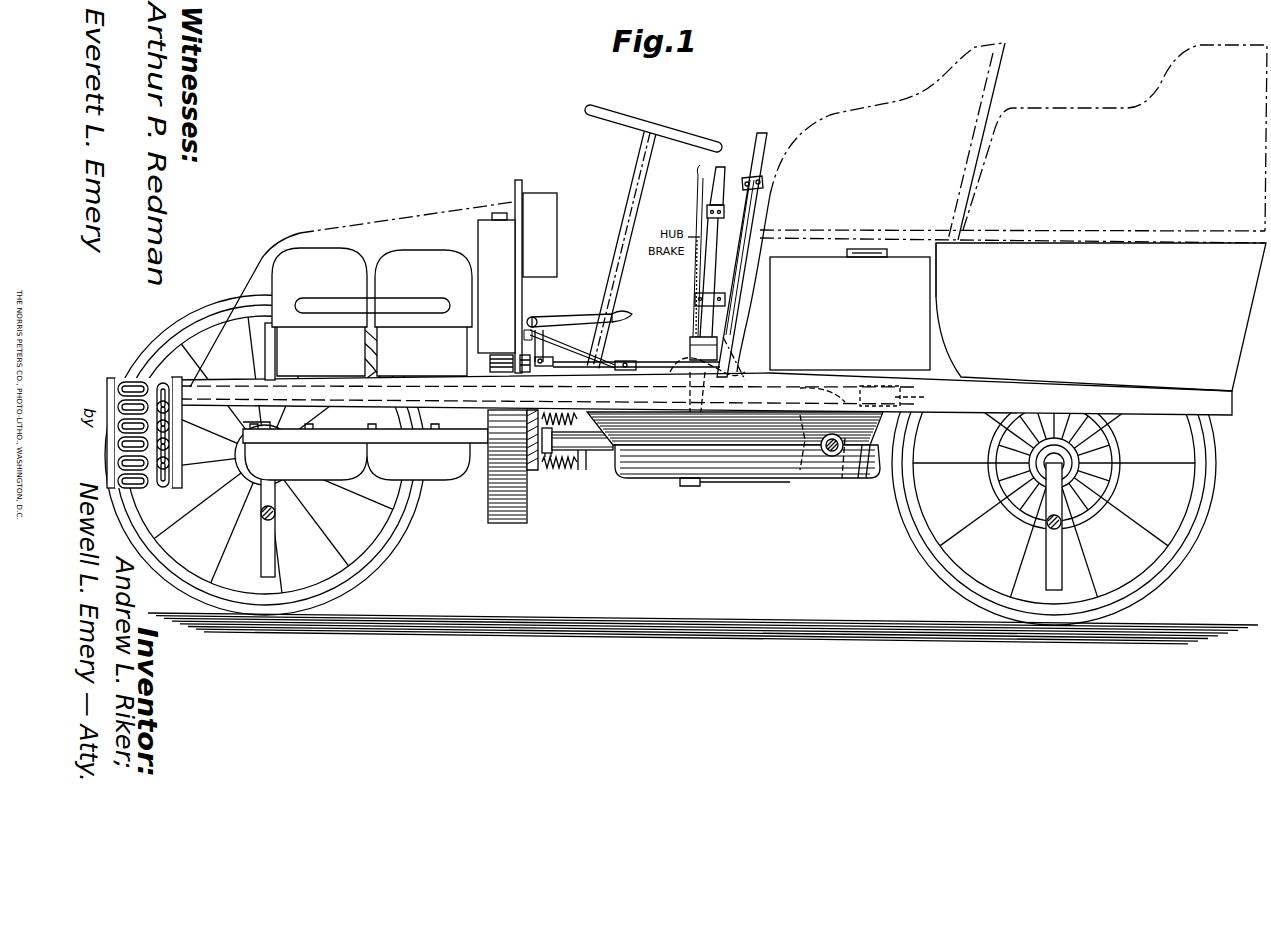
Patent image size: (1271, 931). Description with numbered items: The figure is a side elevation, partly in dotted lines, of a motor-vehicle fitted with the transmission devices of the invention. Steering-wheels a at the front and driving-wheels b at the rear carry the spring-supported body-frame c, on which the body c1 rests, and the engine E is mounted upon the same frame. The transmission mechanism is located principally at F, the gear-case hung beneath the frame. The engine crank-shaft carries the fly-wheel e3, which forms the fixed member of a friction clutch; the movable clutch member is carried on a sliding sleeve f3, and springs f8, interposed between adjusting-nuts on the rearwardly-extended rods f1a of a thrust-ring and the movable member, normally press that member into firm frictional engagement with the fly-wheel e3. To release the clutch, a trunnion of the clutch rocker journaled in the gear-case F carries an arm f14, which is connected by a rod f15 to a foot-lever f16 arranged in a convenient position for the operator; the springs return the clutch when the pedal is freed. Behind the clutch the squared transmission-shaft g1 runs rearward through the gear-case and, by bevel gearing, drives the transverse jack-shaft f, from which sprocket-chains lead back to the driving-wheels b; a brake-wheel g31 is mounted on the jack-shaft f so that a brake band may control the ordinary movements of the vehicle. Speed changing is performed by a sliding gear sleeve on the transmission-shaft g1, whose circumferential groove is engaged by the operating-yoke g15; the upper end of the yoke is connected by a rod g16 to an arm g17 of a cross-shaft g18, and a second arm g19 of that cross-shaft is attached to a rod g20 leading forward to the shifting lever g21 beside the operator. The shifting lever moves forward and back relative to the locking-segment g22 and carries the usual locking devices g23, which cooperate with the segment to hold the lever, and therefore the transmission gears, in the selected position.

The engine E is at (292, 270).
The steering-wheels a is at (395, 533).
The driving-wheels b is at (928, 553).
The body-frame c is at (702, 394).
The body c1 is at (1101, 317).
The fly-wheel e3 is at (510, 523).
The gear-case F is at (652, 460).
The jack-shaft f is at (815, 470).
The sliding sleeve f3 is at (600, 450).
The springs f8 is at (550, 468).
The rearwardly-extended rods f1a is at (560, 468).
The transmission-shaft g1 is at (584, 470).
The arm f14 is at (660, 362).
The rod f15 is at (595, 348).
The foot-lever f16 is at (575, 320).
The operating-yoke g15 is at (740, 370).
The rod g16 is at (812, 385).
The arm g17 is at (924, 400).
The cross-shaft g18 is at (866, 478).
The second arm g19 is at (848, 478).
The rod g20 is at (745, 486).
The shifting lever g21 is at (735, 283).
The locking-segment g22 is at (717, 352).
The locking devices g23 is at (763, 184).
The brake-wheel g31 is at (880, 386).